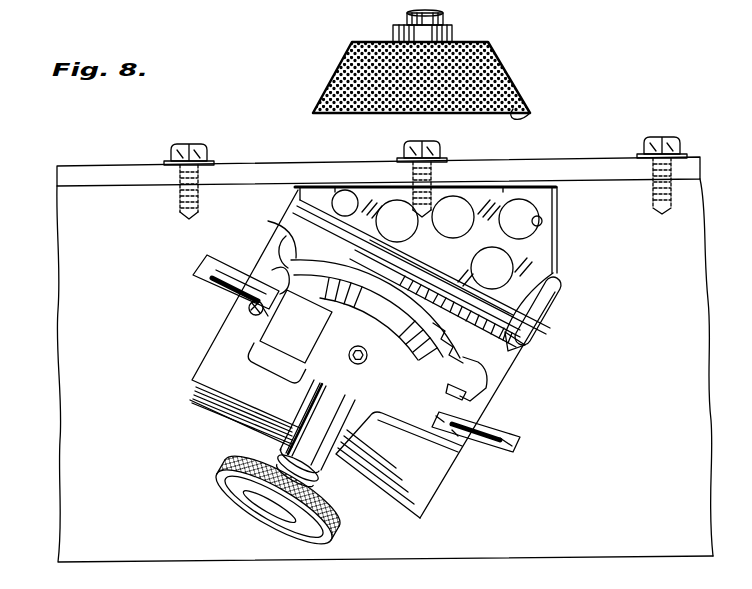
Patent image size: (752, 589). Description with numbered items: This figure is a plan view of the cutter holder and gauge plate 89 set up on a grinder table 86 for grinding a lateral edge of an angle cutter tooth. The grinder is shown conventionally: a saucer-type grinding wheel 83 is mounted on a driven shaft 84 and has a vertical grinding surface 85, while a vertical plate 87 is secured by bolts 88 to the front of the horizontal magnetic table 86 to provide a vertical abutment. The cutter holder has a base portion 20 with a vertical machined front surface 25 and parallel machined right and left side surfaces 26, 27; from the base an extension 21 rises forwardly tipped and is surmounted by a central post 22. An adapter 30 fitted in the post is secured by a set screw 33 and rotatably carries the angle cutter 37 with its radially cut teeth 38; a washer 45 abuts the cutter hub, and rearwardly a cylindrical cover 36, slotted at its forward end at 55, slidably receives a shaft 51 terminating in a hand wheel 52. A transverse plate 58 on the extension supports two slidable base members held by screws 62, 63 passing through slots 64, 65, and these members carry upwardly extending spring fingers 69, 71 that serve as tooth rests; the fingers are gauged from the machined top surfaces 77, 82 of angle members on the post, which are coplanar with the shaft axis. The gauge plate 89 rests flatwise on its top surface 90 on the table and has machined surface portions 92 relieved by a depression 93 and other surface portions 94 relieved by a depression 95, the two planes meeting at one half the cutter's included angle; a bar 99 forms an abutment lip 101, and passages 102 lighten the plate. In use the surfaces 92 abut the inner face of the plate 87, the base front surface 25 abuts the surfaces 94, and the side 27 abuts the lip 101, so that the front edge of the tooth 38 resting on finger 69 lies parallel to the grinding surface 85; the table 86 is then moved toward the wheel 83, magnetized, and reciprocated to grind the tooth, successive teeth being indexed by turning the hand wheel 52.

The base portion 20 is at (490, 375).
The extension 21 is at (442, 465).
The central post 22 is at (375, 380).
The front surface 25 is at (520, 342).
The right side surface 26 is at (248, 304).
The left side surface 27 is at (487, 391).
The adapter 30 is at (357, 320).
The set screw 33 is at (370, 362).
The cylindrical cover 36 is at (303, 429).
The angle cutter 37 is at (448, 348).
The teeth 38 is at (290, 240).
The washer 45 is at (430, 276).
The shaft 51 is at (283, 451).
The hand wheel 52 is at (220, 484).
The slot 55 is at (292, 396).
The transverse plate 58 is at (207, 262).
The screw 62 is at (257, 313).
The screw 63 is at (452, 432).
The slot 64 is at (215, 283).
The slot 65 is at (495, 442).
The spring finger 69 is at (276, 268).
The spring finger 71 is at (485, 401).
The top surface 77 is at (258, 334).
The top surface 82 is at (440, 420).
The grinding wheel 83 is at (507, 78).
The driven shaft 84 is at (437, 18).
The grinding surface 85 is at (530, 113).
The grinder table 86 is at (82, 426).
The vertical plate 87 is at (240, 172).
The bolts 88 is at (182, 146).
The gauge plate 89 is at (560, 197).
The top surface 90 is at (531, 256).
The machined surface portions 92 is at (336, 188).
The depression 93 is at (394, 190).
The surface portions 94 is at (552, 271).
The depression 95 is at (412, 262).
The bar 99 is at (552, 302).
The abutment lip 101 is at (513, 352).
The passages 102 is at (542, 223).